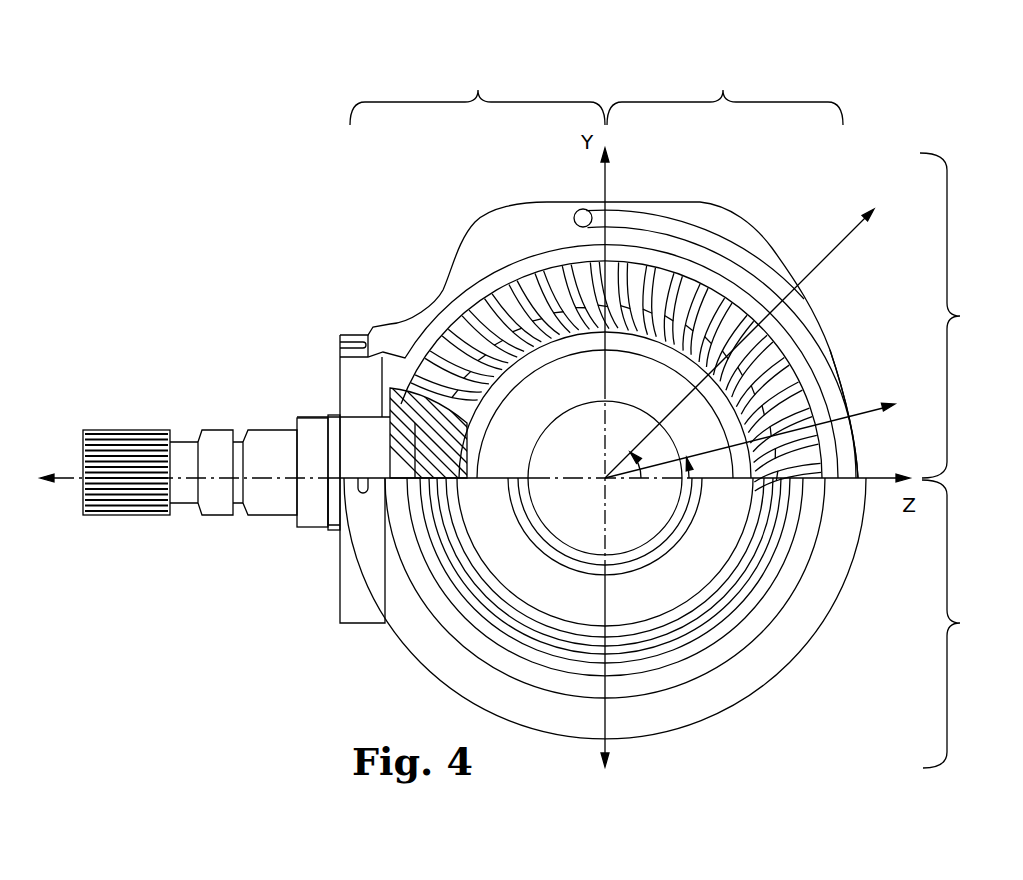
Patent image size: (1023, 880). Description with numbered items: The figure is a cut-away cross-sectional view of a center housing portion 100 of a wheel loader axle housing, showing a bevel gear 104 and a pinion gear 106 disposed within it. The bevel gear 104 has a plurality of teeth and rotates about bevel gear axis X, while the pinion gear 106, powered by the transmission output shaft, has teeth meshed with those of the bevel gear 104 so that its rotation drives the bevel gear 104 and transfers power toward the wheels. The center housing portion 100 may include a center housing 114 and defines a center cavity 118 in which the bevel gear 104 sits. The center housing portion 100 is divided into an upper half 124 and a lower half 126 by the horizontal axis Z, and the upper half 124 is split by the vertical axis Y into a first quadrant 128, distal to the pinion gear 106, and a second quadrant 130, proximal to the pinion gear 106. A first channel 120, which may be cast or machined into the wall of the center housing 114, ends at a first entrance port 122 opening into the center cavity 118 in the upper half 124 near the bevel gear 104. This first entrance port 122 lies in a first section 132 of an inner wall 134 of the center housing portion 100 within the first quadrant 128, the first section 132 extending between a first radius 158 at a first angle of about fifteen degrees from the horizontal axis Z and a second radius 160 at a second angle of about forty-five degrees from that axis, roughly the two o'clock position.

The center housing portion 100 is at (753, 224).
The bevel gear 104 is at (482, 332).
The pinion gear 106 is at (415, 400).
The center housing 114 is at (463, 317).
The center cavity 118 is at (825, 434).
The first channel 120 is at (710, 230).
The first entrance port 122 is at (800, 370).
The upper half 124 is at (963, 315).
The lower half 126 is at (964, 624).
The first quadrant 128 is at (725, 93).
The second quadrant 130 is at (477, 93).
The first section 132 is at (820, 392).
The inner wall 134 is at (832, 462).
The first radius 158 is at (872, 412).
The second radius 160 is at (832, 258).